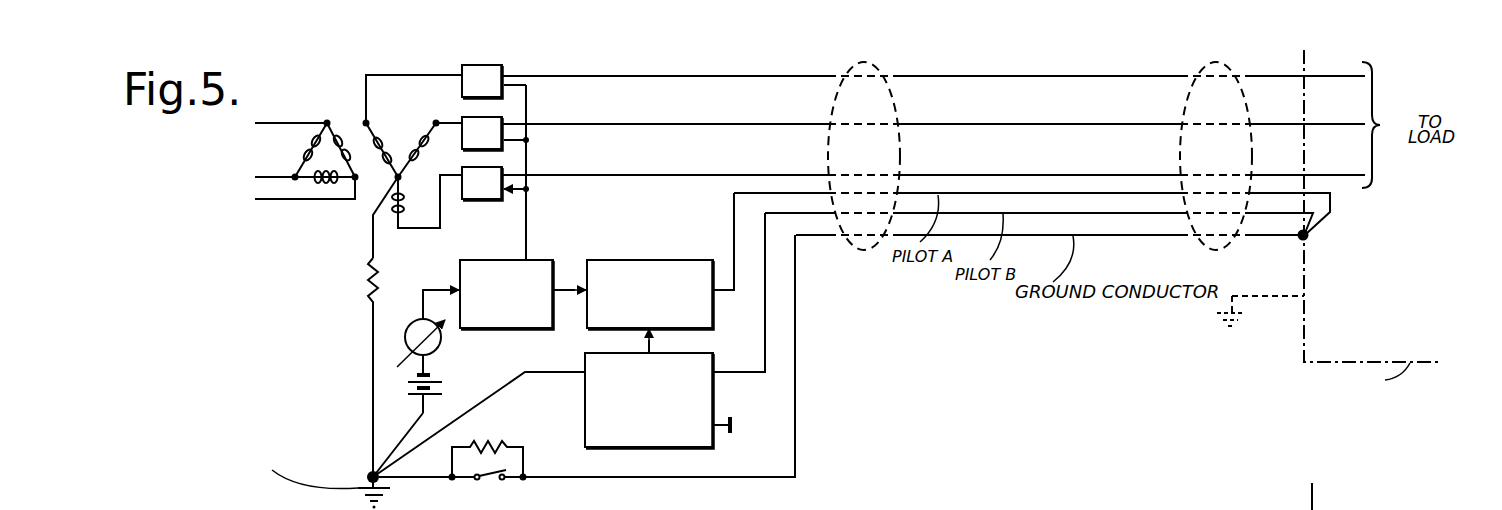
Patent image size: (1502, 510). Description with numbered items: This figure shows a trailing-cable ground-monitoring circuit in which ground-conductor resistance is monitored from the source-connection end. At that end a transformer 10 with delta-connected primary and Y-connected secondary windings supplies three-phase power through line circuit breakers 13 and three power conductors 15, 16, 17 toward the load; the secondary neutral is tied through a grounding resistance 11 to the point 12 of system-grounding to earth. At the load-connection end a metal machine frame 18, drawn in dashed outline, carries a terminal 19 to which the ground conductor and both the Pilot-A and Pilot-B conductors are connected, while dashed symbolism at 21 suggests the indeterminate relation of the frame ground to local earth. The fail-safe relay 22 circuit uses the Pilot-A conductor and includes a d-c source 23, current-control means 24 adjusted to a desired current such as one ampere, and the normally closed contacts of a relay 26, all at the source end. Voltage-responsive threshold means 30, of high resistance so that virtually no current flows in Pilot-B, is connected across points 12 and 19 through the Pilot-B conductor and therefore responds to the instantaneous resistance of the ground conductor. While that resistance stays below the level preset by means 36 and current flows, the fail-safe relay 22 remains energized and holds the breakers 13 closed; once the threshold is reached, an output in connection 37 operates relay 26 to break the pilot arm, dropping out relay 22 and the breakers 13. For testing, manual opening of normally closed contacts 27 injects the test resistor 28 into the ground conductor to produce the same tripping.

The transformer 10 is at (347, 117).
The grounding resistance 11 is at (367, 275).
The point of system-grounding to earth 12 is at (368, 473).
The line circuit breakers 13 is at (502, 65).
The power conductor 15 is at (628, 78).
The power conductor 16 is at (627, 128).
The power conductor 17 is at (627, 178).
The machine frame 18 is at (1303, 153).
The terminal 19 is at (1310, 237).
The load-frame ground to local-earth ground 21 is at (1247, 292).
The fail-safe relay 22 is at (497, 258).
The d-c source 23 is at (443, 387).
The current-control means 24 is at (417, 323).
The relay with normally closed contacts 26 is at (648, 258).
The normally closed contacts 27 is at (493, 473).
The test resistor 28 is at (492, 440).
The threshold means 30 is at (585, 398).
The threshold-level preset means 36 is at (735, 420).
The connection 37 is at (654, 343).